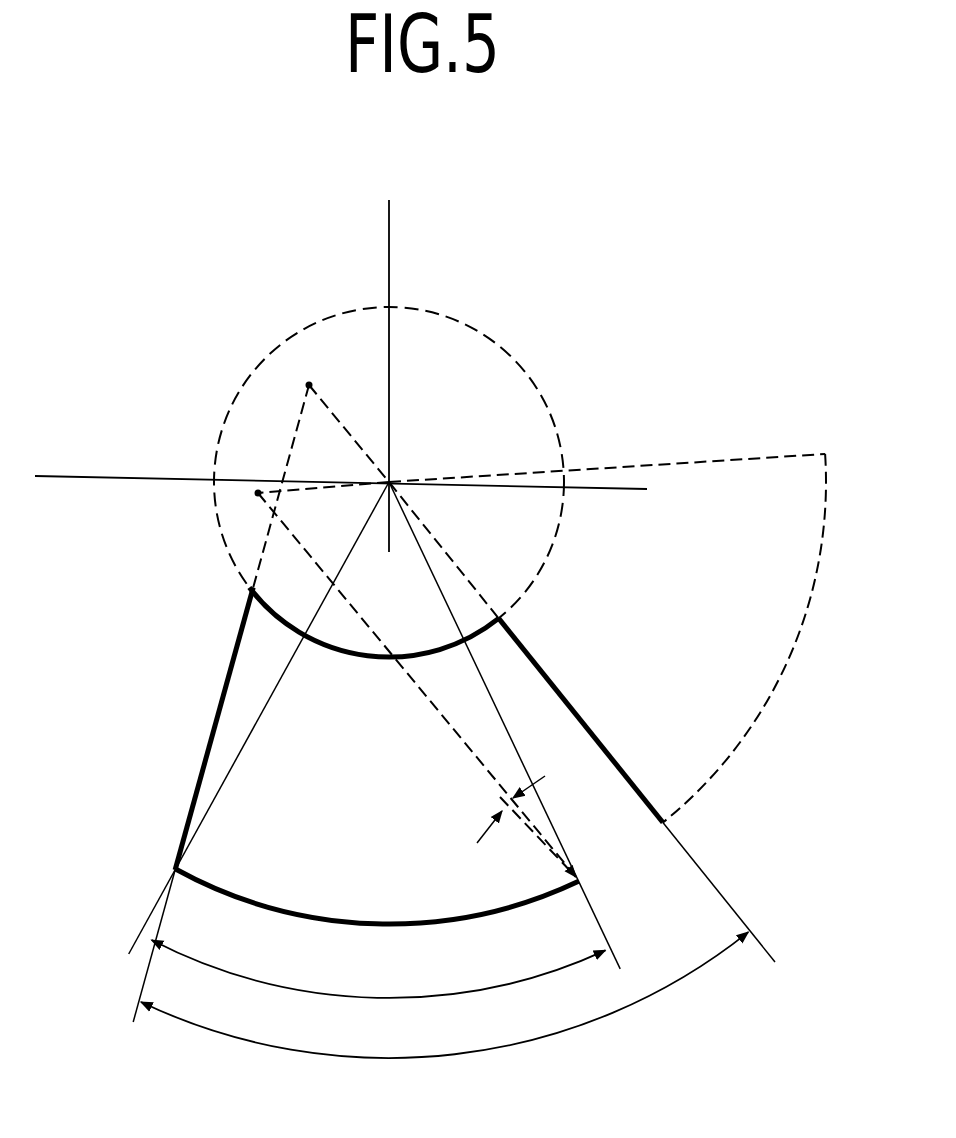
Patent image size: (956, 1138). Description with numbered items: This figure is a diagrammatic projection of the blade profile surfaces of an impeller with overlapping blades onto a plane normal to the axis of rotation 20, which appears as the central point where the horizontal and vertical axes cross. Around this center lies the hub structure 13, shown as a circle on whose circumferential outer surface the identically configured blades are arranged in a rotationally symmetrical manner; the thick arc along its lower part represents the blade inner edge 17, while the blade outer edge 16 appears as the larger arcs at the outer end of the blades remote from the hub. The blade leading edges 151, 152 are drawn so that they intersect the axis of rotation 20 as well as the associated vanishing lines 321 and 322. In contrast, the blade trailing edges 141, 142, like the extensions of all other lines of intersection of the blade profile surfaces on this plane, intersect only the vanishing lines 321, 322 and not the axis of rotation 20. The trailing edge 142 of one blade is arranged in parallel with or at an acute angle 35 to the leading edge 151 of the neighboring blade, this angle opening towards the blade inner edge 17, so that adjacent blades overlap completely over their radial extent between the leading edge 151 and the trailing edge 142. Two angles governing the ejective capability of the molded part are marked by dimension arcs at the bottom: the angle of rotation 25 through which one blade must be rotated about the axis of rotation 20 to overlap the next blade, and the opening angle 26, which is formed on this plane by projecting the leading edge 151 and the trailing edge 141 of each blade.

The hub structure 13 is at (484, 332).
The axis of rotation 20 is at (389, 482).
The blade inner edge 17 is at (560, 508).
The vanishing line 321 is at (307, 385).
The vanishing line 322 is at (258, 493).
The blade leading edge 152 is at (702, 462).
The blade trailing edge 141 is at (214, 720).
The blade leading edge 151 is at (605, 752).
The blade outer edge 16 is at (790, 652).
The blade trailing edge 142 is at (490, 777).
The acute angle 35 is at (498, 812).
The angle of rotation 25 is at (378, 995).
The opening angle 26 is at (468, 1052).